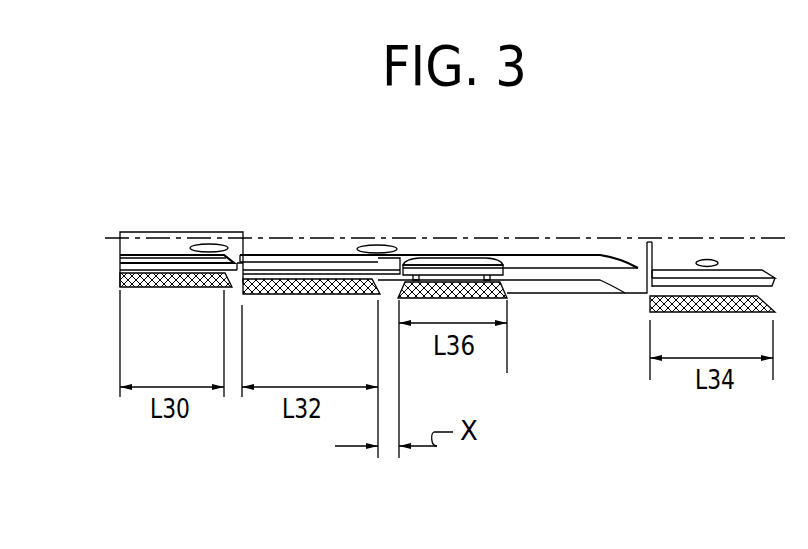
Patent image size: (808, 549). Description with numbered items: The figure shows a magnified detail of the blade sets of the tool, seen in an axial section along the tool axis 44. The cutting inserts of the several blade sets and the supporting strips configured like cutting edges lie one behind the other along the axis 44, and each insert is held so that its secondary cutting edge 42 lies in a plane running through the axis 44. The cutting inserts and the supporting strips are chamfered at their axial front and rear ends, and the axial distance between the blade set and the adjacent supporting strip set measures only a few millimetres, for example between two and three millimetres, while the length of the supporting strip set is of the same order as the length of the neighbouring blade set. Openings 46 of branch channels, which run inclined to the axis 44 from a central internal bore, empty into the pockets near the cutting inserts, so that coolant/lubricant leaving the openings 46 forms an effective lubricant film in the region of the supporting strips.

The secondary cutting edge 42 is at (185, 289).
The tool axis 44 is at (672, 240).
The openings 46 is at (208, 244).